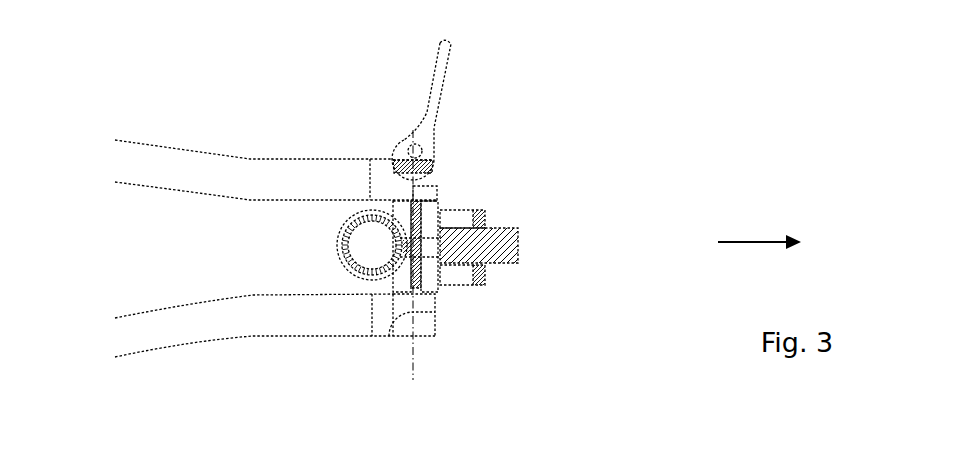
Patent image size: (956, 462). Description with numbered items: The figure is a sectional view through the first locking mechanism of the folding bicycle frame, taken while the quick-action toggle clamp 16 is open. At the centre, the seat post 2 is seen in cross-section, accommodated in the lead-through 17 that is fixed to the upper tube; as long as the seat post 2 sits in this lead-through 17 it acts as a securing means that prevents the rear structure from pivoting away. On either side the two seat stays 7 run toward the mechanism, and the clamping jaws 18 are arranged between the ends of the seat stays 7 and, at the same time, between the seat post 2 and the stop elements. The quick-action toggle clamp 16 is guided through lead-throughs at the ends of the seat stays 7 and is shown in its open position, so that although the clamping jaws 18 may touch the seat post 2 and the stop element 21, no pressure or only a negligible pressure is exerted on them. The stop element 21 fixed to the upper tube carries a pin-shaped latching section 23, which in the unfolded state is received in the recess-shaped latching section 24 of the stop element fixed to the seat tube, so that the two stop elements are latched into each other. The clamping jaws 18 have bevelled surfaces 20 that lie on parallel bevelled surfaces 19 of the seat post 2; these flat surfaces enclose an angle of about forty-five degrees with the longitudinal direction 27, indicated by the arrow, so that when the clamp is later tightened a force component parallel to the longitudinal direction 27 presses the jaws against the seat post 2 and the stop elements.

The seat post 2 is at (355, 225).
The seat stays 7 is at (137, 148).
The quick-action toggle clamp 16 is at (413, 147).
The lead-through 17 is at (340, 265).
The clamping jaws 18 is at (428, 212).
The bevelled surfaces of the seat post 19 is at (390, 227).
The bevelled surfaces of the clamping jaws 20 is at (392, 227).
The stop element 21 is at (483, 250).
The latching section 23 is at (460, 228).
The latching section 24 is at (460, 275).
The longitudinal direction 27 is at (750, 242).